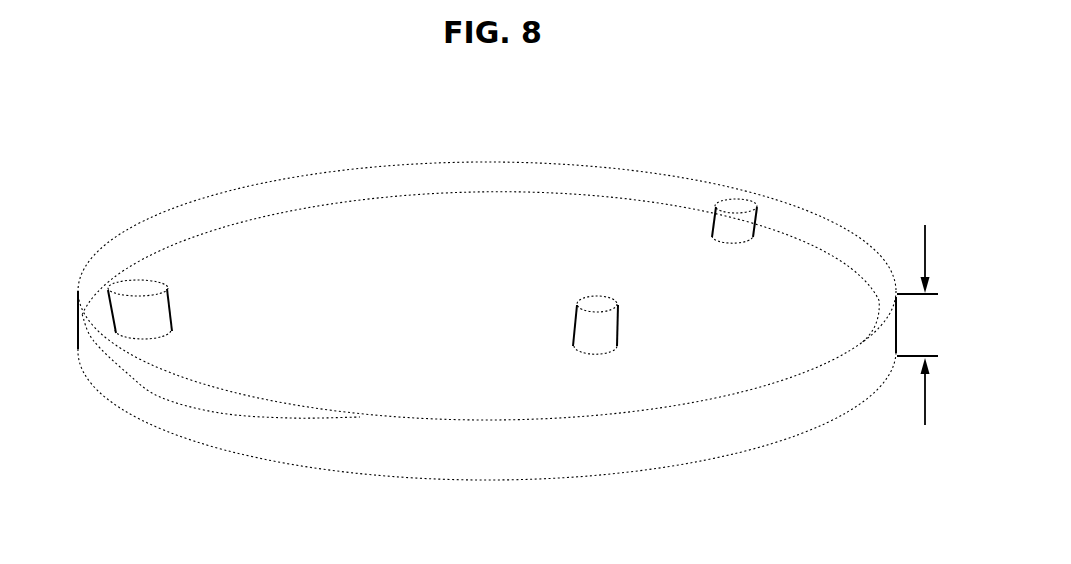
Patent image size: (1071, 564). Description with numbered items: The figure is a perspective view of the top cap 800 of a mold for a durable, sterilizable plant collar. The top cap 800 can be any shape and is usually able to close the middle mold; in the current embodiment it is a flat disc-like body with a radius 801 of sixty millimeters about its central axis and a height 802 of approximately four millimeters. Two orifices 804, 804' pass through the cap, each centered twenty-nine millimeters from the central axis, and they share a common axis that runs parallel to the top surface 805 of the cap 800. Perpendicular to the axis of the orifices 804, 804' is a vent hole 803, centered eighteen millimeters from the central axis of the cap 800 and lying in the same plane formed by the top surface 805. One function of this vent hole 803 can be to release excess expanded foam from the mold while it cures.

The top cap 800 is at (496, 282).
The radius 801 is at (170, 392).
The height 802 is at (926, 325).
The vent hole 803 is at (589, 280).
The orifice 804 is at (769, 188).
The orifice 804' is at (105, 276).
The top surface 805 is at (480, 305).